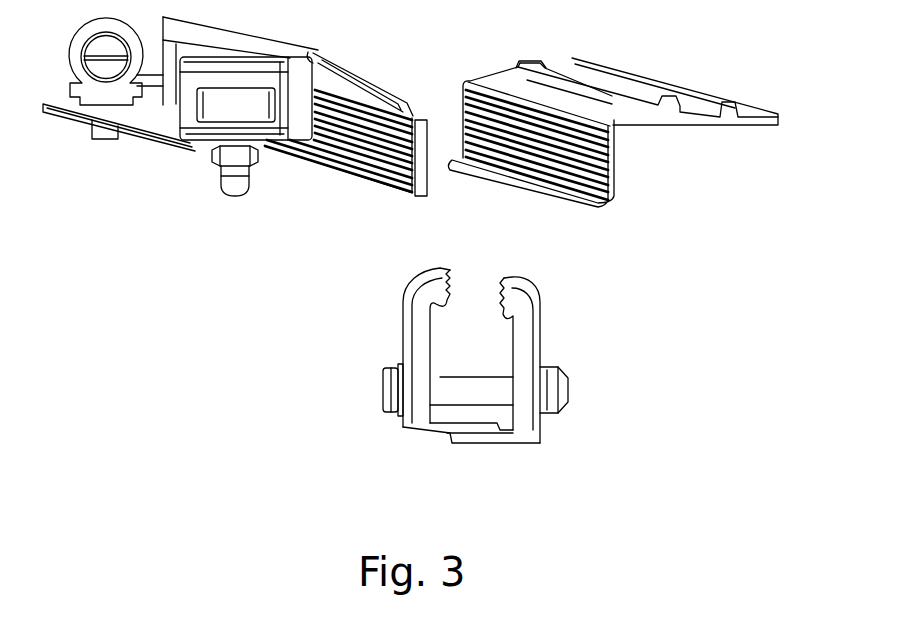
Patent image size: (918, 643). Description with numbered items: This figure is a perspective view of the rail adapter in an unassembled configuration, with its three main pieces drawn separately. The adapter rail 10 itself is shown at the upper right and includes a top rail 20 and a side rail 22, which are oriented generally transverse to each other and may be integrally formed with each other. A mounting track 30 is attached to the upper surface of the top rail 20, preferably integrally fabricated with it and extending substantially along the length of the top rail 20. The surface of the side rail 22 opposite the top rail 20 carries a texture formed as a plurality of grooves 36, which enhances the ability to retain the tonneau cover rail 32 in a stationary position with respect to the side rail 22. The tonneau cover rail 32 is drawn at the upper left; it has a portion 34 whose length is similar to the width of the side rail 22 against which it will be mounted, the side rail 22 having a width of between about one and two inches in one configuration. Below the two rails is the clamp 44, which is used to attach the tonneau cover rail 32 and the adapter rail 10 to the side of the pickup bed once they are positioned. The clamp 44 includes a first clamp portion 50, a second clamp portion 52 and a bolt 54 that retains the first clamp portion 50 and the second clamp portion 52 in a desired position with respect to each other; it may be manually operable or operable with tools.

The adapter rail 10 is at (656, 361).
The top rail 20 is at (762, 127).
The side rail 22 is at (609, 176).
The mounting track 30 is at (532, 66).
The tonneau cover rail 32 is at (192, 234).
The portion of tonneau cover rail 34 is at (408, 183).
The grooves 36 is at (463, 114).
The clamp 44 is at (420, 424).
The first clamp portion 50 is at (413, 310).
The second clamp portion 52 is at (537, 310).
The bolt 54 is at (392, 382).